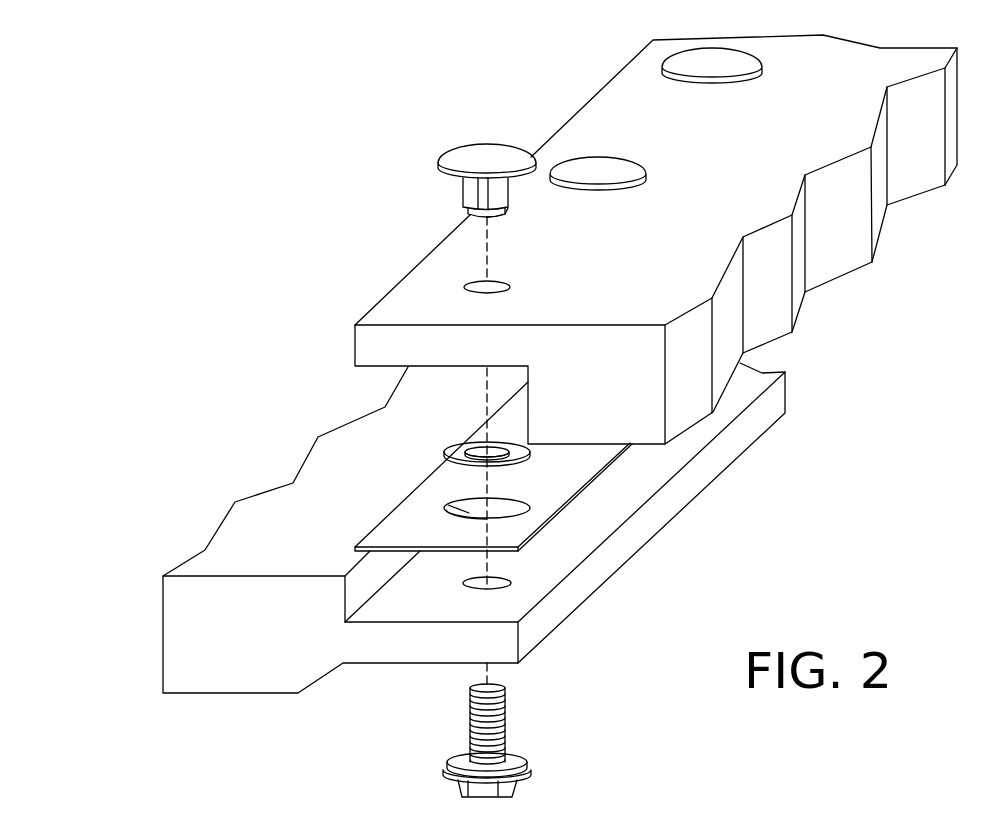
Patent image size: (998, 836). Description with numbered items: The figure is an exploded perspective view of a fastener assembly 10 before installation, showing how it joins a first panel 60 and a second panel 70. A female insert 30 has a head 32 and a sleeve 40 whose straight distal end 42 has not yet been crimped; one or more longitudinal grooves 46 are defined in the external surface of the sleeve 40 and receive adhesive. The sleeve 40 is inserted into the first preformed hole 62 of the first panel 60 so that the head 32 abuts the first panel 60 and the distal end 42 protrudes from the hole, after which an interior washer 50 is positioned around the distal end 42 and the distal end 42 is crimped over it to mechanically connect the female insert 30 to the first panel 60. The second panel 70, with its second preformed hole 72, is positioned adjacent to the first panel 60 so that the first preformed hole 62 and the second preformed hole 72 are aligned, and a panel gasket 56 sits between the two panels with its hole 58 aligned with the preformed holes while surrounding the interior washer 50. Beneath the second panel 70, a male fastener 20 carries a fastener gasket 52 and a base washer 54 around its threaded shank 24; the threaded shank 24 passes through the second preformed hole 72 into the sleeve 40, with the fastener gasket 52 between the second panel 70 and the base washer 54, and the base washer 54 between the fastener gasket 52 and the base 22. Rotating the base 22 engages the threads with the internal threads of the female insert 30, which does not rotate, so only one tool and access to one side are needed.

The fastener assembly 10 is at (399, 112).
The male fastener 20 is at (497, 729).
The base 22 is at (520, 793).
The threaded shank 24 is at (505, 712).
The female insert 30 is at (475, 145).
The head 32 is at (438, 158).
The sleeve 40 is at (463, 190).
The distal end 42 is at (488, 212).
The longitudinal grooves 46 is at (547, 257).
The interior washer 50 is at (446, 455).
The fastener gasket 52 is at (460, 753).
The base washer 54 is at (530, 773).
The panel gasket 56 is at (553, 519).
The hole 58 is at (445, 505).
The first panel 60 is at (643, 445).
The first preformed hole 62 is at (464, 287).
The second panel 70 is at (238, 694).
The second preformed hole 72 is at (505, 583).